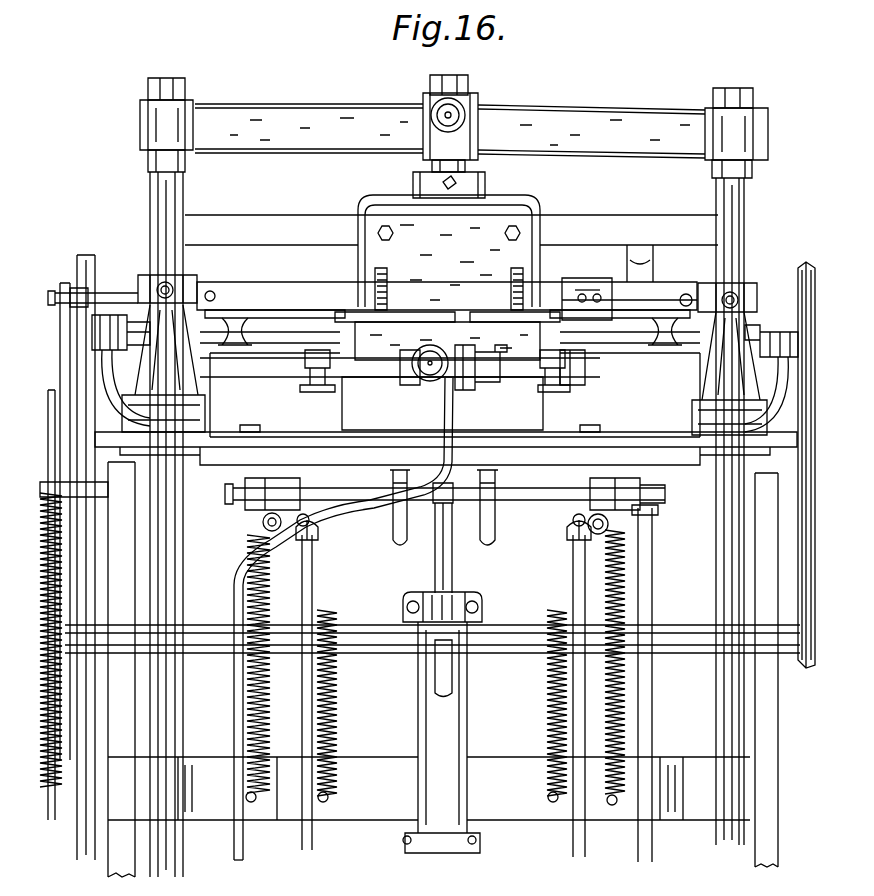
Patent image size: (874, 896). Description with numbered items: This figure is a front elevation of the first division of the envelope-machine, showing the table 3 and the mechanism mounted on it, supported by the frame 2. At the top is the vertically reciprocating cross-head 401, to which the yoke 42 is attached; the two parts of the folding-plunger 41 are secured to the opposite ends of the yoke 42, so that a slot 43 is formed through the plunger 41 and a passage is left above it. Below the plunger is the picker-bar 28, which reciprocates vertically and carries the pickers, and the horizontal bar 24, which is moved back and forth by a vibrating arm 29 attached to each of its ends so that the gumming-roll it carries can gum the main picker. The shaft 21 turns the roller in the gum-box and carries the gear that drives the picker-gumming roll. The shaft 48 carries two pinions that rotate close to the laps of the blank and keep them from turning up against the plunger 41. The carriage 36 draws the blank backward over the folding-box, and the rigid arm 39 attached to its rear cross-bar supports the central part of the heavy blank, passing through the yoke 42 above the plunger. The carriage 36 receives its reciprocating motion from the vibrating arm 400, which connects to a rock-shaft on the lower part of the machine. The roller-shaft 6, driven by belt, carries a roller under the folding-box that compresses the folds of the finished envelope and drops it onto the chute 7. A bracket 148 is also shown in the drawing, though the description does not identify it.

The frame 2 is at (409, 669).
The table 3 is at (630, 444).
The roller-shaft 6 is at (500, 627).
The chute 7 is at (496, 527).
The shaft 21 is at (134, 344).
The horizontal bar 24 is at (286, 342).
The picker-bar 28 is at (636, 206).
The vibrating arm 29 is at (200, 375).
The carriage 36 is at (580, 375).
The rigid arm 39 is at (470, 380).
The folding-plunger 41 is at (520, 322).
The yoke 42 is at (545, 197).
The slot 43 is at (452, 312).
The shaft 48 is at (93, 288).
The bracket 148 is at (606, 312).
The vibrating arm 400 is at (243, 857).
The cross-head 401 is at (758, 128).